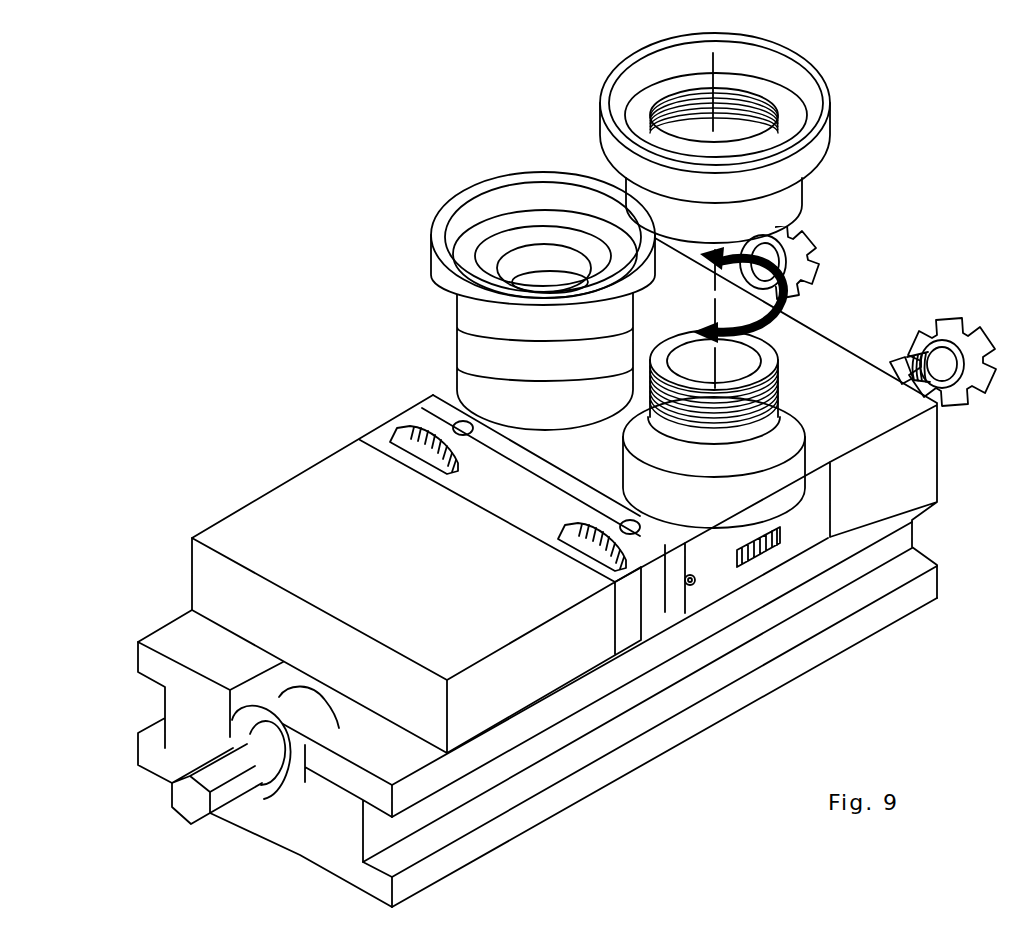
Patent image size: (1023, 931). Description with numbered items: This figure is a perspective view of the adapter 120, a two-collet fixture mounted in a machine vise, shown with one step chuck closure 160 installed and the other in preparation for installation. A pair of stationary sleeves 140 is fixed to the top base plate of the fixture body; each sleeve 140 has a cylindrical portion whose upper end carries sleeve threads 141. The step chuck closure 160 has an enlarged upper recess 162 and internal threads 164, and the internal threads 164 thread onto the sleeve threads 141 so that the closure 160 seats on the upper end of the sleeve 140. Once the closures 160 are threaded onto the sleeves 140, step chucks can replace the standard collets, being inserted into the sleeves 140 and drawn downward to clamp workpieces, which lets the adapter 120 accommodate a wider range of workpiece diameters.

The adapter 120 is at (364, 393).
The stationary sleeve 140 is at (797, 455).
The sleeve threads 141 is at (778, 387).
The step chuck closure 160 is at (740, 138).
The enlarged upper recess 162 is at (648, 96).
The internal threads 164 is at (758, 98).